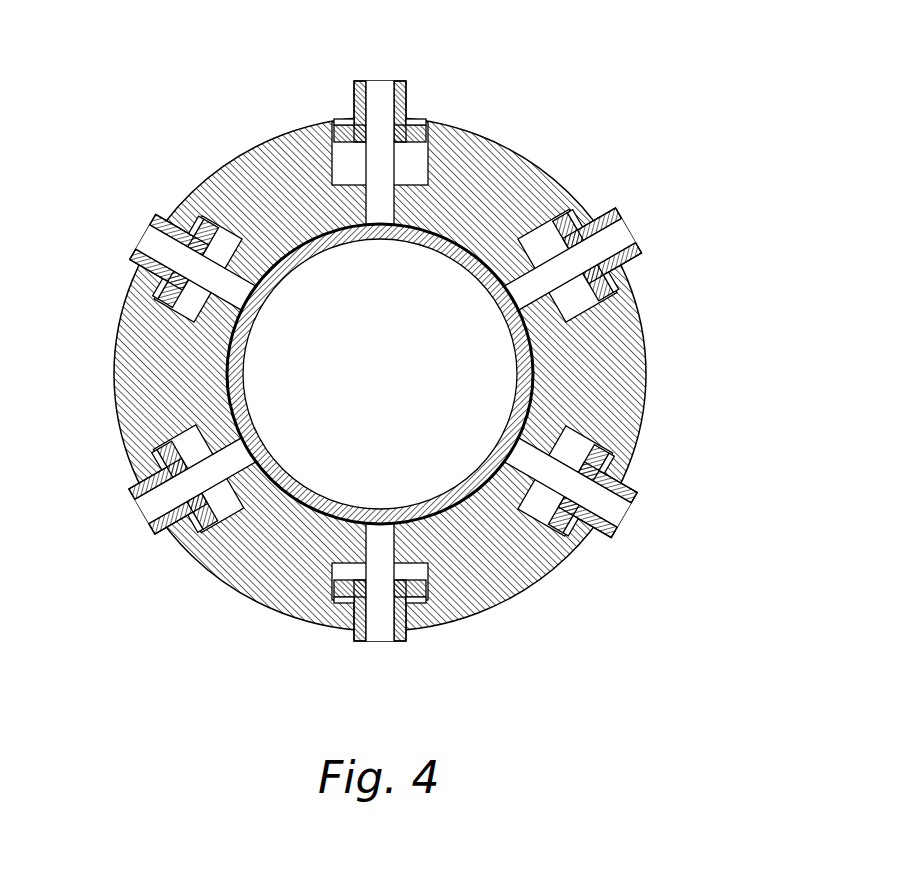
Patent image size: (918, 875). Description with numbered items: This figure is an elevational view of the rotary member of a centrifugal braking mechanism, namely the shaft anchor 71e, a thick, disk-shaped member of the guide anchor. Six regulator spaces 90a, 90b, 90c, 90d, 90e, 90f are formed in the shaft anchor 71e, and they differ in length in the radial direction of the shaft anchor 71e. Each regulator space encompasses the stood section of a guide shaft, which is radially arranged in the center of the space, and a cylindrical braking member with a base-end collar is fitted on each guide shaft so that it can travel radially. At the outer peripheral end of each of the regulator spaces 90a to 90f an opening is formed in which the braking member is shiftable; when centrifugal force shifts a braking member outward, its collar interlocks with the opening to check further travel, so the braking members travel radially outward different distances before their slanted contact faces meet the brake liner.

The shaft anchor 71e is at (272, 182).
The regulator space 90a is at (430, 160).
The regulator space 90b is at (636, 294).
The regulator space 90c is at (605, 460).
The regulator space 90d is at (438, 590).
The regulator space 90e is at (212, 530).
The regulator space 90f is at (210, 210).